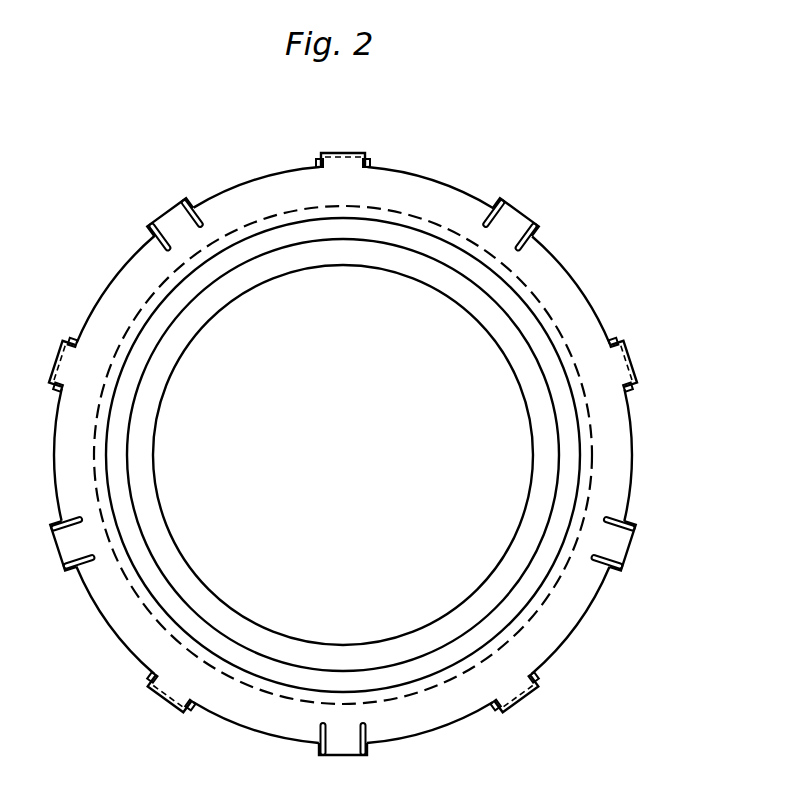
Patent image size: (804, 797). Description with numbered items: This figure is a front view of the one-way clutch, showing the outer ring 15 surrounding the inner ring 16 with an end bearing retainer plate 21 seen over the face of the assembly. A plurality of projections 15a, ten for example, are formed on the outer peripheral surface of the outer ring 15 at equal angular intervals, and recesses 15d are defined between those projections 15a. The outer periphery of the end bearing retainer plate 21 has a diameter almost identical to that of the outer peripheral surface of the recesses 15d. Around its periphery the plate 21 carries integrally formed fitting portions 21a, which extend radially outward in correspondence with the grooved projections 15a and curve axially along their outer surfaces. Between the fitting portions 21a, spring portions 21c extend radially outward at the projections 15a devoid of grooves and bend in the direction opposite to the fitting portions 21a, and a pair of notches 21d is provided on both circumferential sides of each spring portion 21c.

The outer ring 15 is at (572, 297).
The projections 15a is at (367, 163).
The recesses 15d is at (445, 180).
The inner ring 16 is at (505, 333).
The end bearing retainer plate 21 is at (123, 303).
The fitting portions 21a is at (344, 153).
The spring portions 21c is at (507, 218).
The notches 21d is at (195, 215).